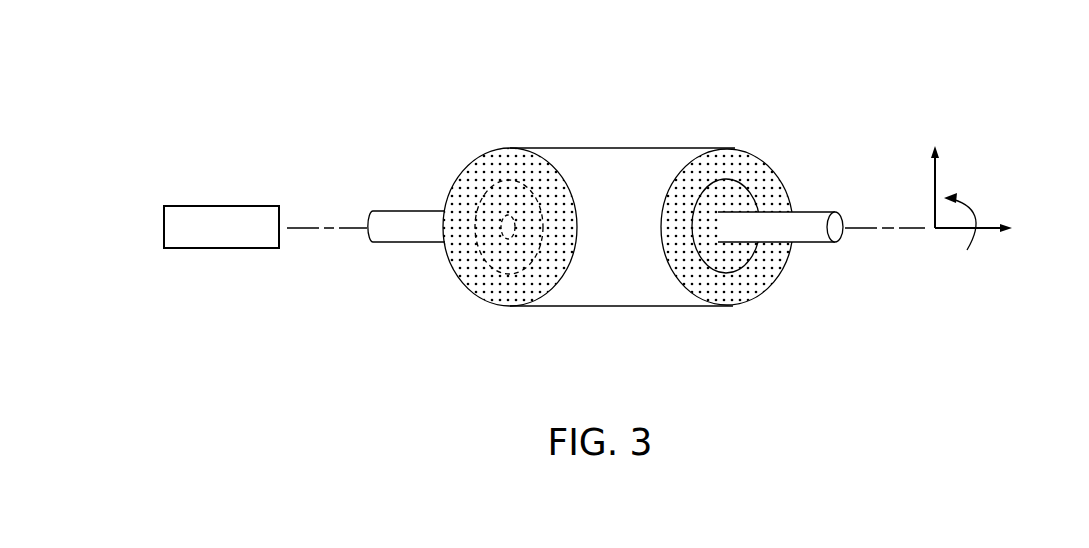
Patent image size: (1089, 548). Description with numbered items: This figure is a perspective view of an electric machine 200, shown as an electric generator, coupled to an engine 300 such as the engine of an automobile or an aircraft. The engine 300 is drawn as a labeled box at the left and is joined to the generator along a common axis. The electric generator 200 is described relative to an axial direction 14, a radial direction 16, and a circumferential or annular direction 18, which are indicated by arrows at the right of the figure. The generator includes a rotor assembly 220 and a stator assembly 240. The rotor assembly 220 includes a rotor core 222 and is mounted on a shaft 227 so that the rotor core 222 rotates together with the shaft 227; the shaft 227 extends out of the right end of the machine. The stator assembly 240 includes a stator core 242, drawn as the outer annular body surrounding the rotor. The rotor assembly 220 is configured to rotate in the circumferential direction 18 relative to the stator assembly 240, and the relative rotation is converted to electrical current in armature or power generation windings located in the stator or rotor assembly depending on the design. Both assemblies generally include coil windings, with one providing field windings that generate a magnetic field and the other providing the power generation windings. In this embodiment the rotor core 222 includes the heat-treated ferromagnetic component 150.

The engine 300 is at (221, 206).
The electric machine 200 is at (724, 97).
The rotor core 222 is at (458, 190).
The stator core 242 is at (766, 148).
The stator assembly 240 is at (776, 172).
The rotor assembly 220 is at (767, 287).
The shaft 227 is at (818, 233).
The heat-treated ferromagnetic component 150 is at (682, 285).
The radial direction 16 is at (937, 160).
The circumferential direction 18 is at (968, 196).
The axial direction 14 is at (1010, 222).